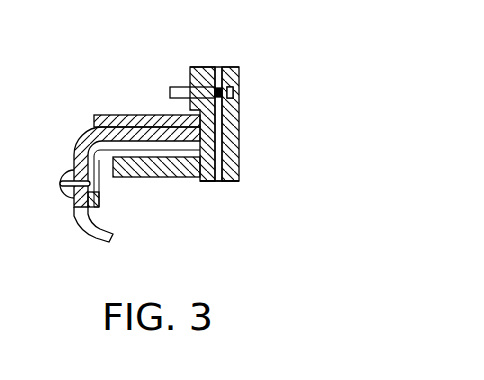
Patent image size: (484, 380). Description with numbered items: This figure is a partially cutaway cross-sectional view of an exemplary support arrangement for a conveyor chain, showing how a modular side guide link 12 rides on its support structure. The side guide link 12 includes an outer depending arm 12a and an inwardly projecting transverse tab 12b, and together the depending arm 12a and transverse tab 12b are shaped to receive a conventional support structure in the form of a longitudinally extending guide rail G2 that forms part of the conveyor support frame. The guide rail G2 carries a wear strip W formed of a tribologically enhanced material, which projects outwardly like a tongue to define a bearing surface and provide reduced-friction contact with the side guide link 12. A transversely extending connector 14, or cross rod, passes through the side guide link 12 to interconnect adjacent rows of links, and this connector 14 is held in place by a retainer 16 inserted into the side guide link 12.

The side guide link 12 is at (233, 67).
The outer depending arm 12a is at (239, 167).
The transverse tab 12b is at (168, 180).
The connector 14 is at (171, 90).
The wear strip W is at (218, 133).
The retainer 16 is at (221, 194).
The guide rail G2 is at (92, 234).